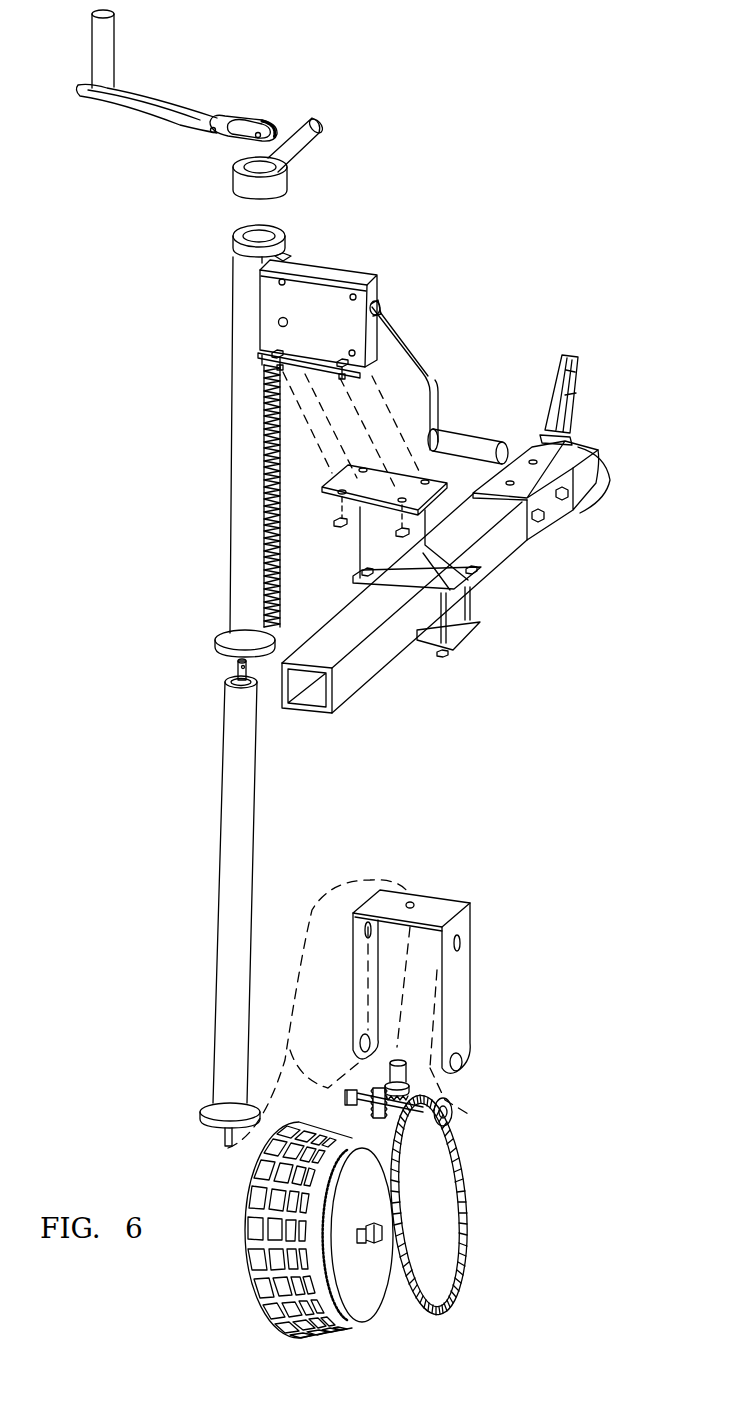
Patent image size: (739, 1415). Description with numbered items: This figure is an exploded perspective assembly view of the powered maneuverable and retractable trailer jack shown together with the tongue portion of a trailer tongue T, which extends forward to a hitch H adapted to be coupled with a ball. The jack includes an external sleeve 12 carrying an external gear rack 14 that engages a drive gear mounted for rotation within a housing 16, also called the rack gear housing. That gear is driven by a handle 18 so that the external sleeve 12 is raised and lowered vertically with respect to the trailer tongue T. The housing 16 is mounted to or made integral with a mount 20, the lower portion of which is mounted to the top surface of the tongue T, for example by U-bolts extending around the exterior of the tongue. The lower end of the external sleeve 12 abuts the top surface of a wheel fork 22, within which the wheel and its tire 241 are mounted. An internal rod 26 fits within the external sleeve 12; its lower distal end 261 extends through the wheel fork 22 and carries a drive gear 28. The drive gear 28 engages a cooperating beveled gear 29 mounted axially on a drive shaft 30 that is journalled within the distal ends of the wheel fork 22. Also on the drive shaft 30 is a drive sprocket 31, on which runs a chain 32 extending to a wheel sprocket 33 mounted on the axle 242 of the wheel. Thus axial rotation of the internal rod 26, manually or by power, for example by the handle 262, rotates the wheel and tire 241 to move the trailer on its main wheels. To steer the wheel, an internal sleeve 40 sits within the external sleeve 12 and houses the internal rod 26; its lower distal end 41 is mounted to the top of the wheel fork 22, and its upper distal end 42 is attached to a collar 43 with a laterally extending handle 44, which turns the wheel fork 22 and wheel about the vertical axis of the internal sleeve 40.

The handle 262 is at (158, 118).
The laterally extending handle 44 is at (310, 142).
The collar 43 is at (282, 183).
The external sleeve 12 is at (247, 425).
The external gear rack 14 is at (263, 508).
The housing 16 is at (322, 292).
The handle 18 is at (420, 373).
The mount 20 is at (346, 554).
The trailer tongue T is at (492, 556).
The hitch H is at (590, 488).
The internal rod 26 is at (233, 673).
The upper distal end 42 is at (237, 688).
The internal sleeve 40 is at (252, 830).
The lower distal end 41 is at (203, 1107).
The lower distal end 261 is at (218, 1138).
The wheel fork 22 is at (462, 972).
The drive gear 28 is at (407, 1075).
The drive shaft 30 is at (457, 1130).
The beveled gear 29 is at (385, 1117).
The drive sprocket 31 is at (460, 1148).
The chain 32 is at (466, 1230).
The tire 241 is at (265, 1318).
The wheel sprocket 33 is at (353, 1303).
The axle 242 is at (365, 1225).